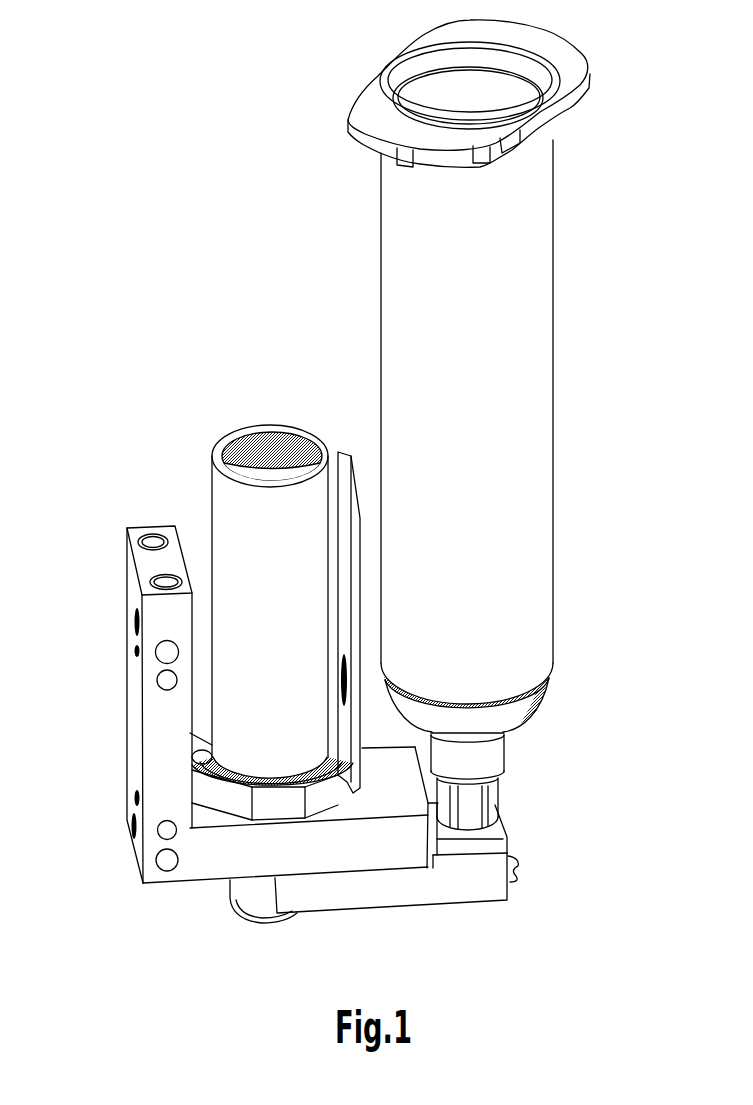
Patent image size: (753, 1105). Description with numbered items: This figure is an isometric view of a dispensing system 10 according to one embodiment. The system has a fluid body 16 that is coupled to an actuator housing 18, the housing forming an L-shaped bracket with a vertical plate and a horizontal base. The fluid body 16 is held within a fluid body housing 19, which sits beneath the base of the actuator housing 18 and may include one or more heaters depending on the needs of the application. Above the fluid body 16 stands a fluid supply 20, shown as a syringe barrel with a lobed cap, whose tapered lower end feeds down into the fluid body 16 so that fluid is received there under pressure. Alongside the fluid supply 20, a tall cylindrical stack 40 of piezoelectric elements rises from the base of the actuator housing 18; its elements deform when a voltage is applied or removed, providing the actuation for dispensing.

The dispensing system 10 is at (164, 145).
The fluid body 16 is at (498, 840).
The actuator housing 18 is at (130, 737).
The fluid body housing 19 is at (463, 880).
The fluid supply 20 is at (508, 637).
The stack of piezoelectric elements 40 is at (227, 513).